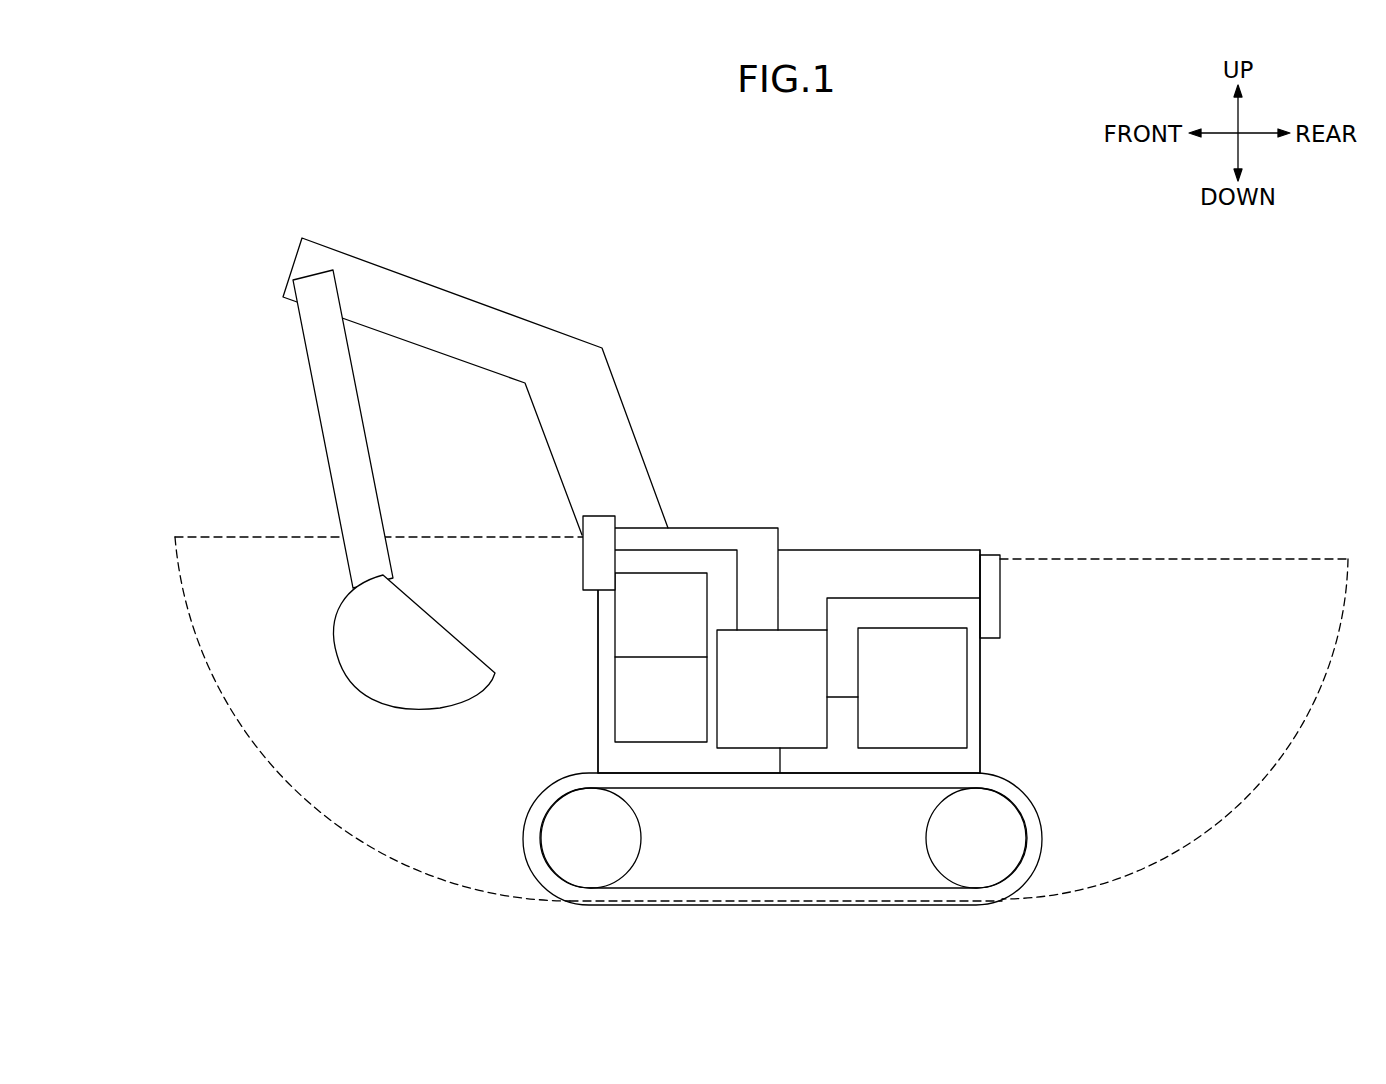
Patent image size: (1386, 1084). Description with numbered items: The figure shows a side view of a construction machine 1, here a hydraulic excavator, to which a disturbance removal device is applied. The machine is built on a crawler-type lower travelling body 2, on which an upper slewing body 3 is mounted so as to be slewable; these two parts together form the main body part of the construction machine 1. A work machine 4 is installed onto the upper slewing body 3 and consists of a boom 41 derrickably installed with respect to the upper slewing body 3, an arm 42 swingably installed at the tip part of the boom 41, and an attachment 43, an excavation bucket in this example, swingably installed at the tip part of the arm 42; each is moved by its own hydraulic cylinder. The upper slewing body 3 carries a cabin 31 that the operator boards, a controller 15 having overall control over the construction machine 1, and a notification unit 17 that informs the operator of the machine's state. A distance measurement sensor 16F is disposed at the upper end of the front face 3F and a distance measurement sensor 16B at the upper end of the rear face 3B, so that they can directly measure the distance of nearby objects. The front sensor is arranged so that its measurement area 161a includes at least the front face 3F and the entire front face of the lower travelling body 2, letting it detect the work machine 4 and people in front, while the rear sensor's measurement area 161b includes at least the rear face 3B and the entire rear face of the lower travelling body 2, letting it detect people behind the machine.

The construction machine 1 is at (800, 186).
The lower travelling body 2 is at (1052, 840).
The upper slewing body 3 is at (792, 610).
The front face 3F is at (635, 610).
The rear face 3B is at (982, 690).
The cabin 31 is at (695, 527).
The work machine 4 is at (450, 480).
The boom 41 is at (552, 330).
The arm 42 is at (320, 428).
The attachment 43 is at (397, 690).
The controller 15 is at (803, 630).
The notification unit 17 is at (893, 628).
The distance measurement sensor 16F is at (585, 560).
The distance measurement sensor 16B is at (995, 585).
The measurement area 161a is at (502, 535).
The measurement area 161b is at (1209, 559).